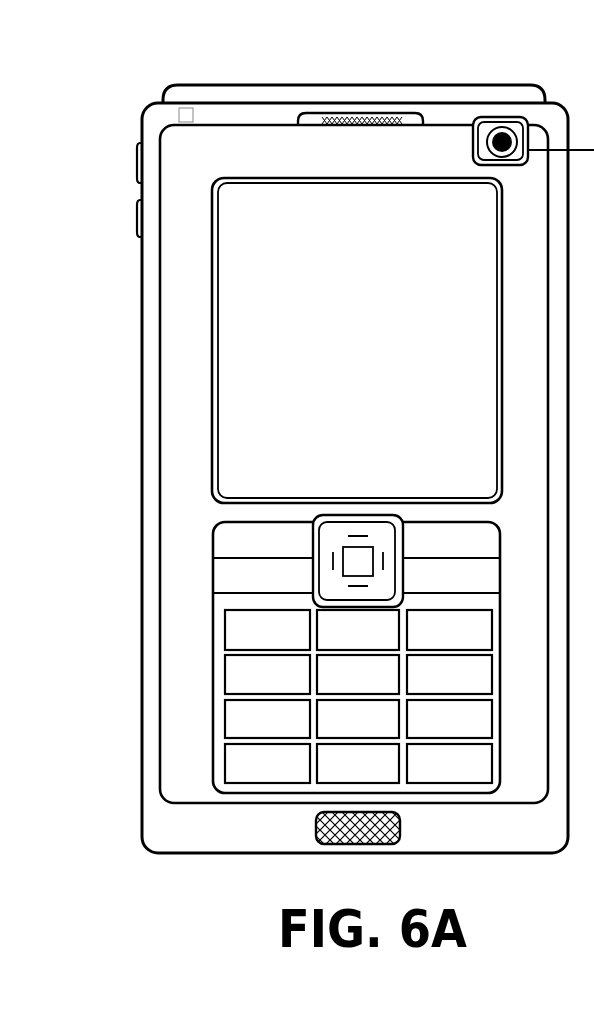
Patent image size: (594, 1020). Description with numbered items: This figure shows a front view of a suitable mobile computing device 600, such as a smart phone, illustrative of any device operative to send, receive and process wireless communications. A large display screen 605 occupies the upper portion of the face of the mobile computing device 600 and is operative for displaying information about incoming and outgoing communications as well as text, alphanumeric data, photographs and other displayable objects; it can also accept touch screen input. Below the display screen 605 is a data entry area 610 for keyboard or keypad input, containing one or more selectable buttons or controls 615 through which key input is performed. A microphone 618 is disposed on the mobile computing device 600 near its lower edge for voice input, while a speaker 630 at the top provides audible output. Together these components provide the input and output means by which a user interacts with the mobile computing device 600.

The mobile computing device 600 is at (134, 108).
The display screen 605 is at (250, 322).
The data entry area 610 is at (213, 570).
The selectable buttons or controls 615 is at (238, 673).
The microphone 618 is at (316, 832).
The speaker 630 is at (405, 113).